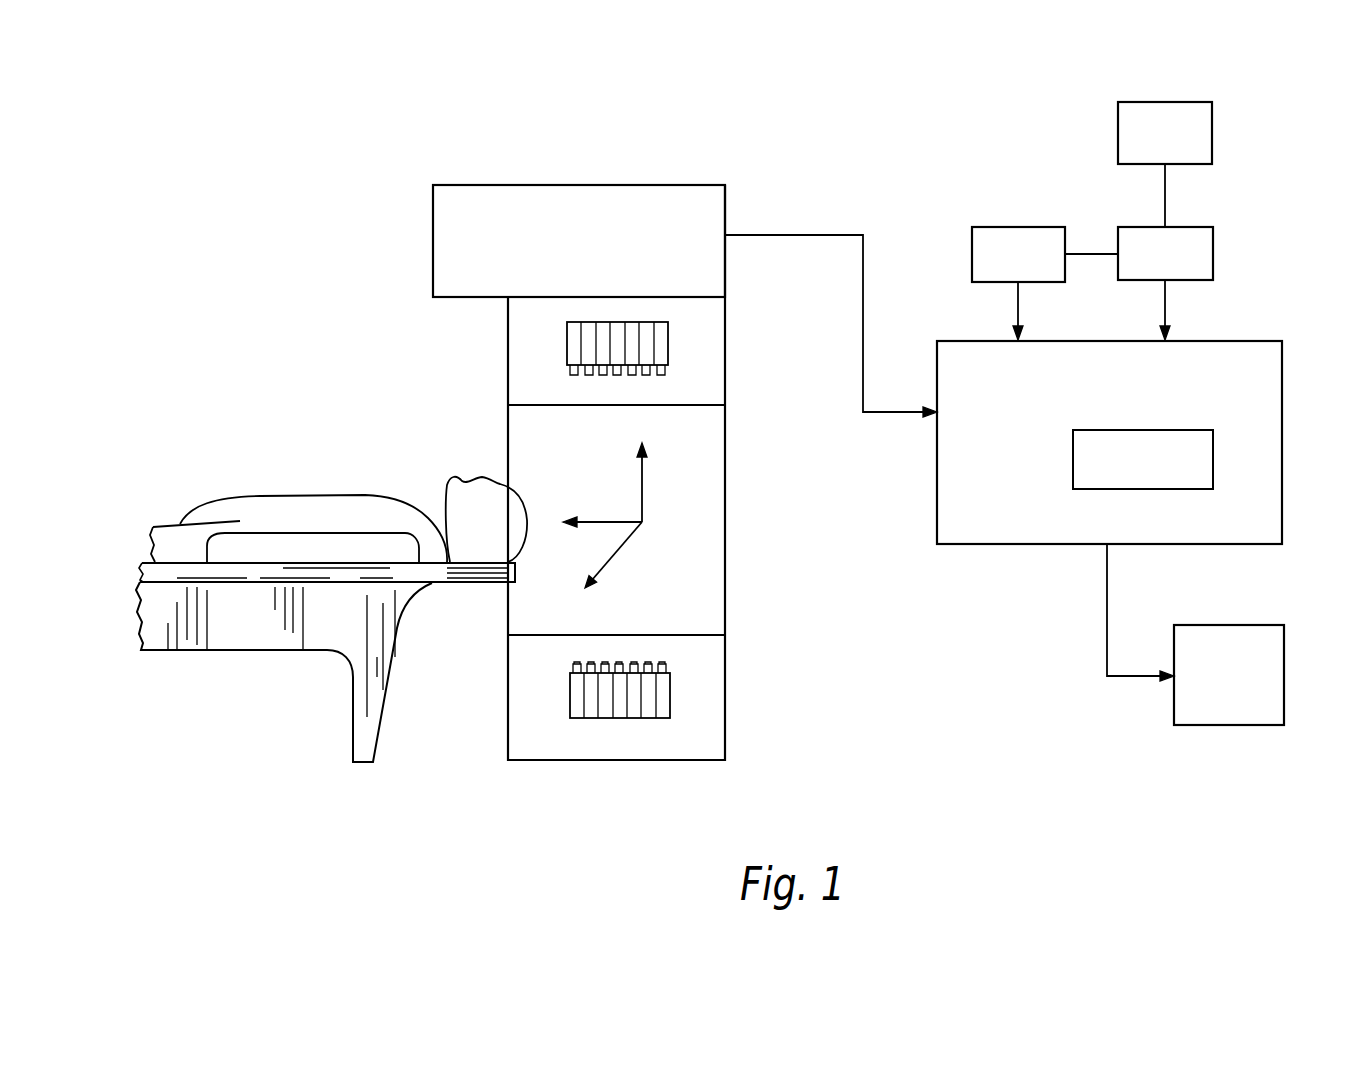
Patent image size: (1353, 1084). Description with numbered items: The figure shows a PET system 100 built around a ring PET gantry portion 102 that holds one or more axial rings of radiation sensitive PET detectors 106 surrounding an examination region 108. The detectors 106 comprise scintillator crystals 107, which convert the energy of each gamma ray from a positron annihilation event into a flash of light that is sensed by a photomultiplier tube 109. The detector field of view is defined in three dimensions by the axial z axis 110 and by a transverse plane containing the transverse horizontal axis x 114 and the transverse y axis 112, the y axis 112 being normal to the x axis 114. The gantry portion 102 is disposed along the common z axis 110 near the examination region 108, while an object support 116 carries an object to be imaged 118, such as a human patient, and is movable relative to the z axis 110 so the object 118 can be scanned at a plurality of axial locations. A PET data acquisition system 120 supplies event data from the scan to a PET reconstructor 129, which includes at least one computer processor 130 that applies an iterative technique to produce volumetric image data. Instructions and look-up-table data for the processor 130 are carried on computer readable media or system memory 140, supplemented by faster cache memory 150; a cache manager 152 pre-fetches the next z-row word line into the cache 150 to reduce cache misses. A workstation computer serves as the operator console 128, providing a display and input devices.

The PET system 100 is at (237, 242).
The ring PET gantry portion 102 is at (745, 668).
The radiation sensitive PET detectors 106 is at (685, 353).
The scintillator crystals 107 is at (661, 375).
The examination region 108 is at (692, 535).
The photomultiplier tube (PMT) 109 is at (572, 347).
The axial z axis 110 is at (603, 520).
The transverse y axis 112 is at (642, 488).
The transverse horizontal axis x 114 is at (618, 548).
The object support 116 is at (272, 625).
The object to be imaged 118 is at (275, 507).
The PET data acquisition system 120 is at (657, 195).
The operator console 128 is at (1225, 726).
The PET reconstructor 129 is at (1245, 338).
The computer processor 130 is at (1073, 457).
The computer readable media / system memory 140 is at (972, 255).
The cache memory 150 is at (1213, 253).
The cache manager 152 is at (1118, 133).